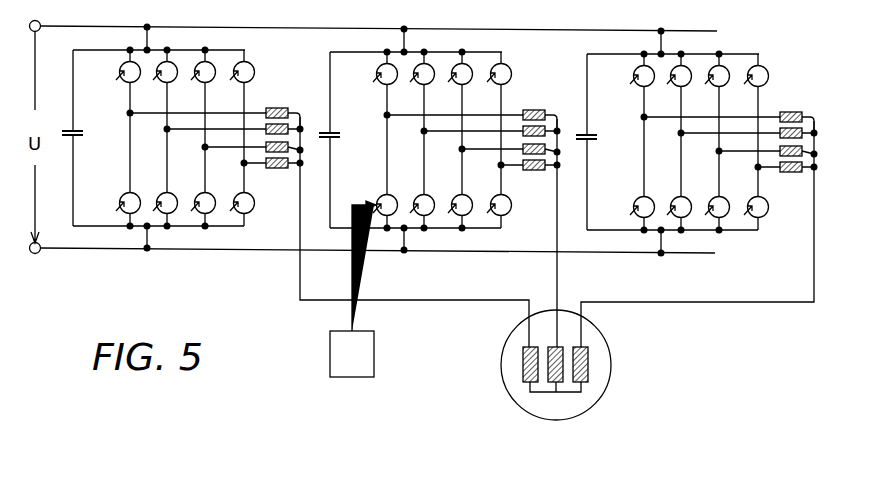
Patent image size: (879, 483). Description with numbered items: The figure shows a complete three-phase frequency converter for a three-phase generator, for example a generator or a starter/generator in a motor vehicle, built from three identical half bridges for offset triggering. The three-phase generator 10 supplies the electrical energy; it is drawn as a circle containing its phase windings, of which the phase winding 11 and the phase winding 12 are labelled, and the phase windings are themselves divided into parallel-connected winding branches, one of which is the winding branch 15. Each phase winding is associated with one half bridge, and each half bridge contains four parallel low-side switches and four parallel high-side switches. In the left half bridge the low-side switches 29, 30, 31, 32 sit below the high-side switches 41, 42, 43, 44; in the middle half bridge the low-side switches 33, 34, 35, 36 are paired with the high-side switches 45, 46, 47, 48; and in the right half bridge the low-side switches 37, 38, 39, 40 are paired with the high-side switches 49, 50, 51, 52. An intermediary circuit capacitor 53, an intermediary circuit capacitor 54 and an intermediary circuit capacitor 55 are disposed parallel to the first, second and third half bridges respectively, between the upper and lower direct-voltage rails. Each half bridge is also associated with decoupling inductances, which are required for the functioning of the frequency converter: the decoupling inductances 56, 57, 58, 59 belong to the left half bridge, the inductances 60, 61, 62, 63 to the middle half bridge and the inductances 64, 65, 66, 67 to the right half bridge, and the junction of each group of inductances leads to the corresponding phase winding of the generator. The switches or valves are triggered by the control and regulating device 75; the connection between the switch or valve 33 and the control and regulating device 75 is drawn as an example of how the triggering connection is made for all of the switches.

The three-phase generator 10 is at (578, 365).
The phase winding 11 is at (522, 353).
The phase winding 12 is at (548, 351).
The winding branch 15 is at (590, 352).
The low-side switch 29 is at (122, 195).
The low-side switch 30 is at (159, 195).
The low-side switch 31 is at (198, 195).
The low-side switch 32 is at (236, 195).
The low-side switch 33 is at (379, 197).
The low-side switch 34 is at (416, 197).
The low-side switch 35 is at (455, 197).
The low-side switch 36 is at (493, 197).
The low-side switch 37 is at (636, 199).
The low-side switch 38 is at (673, 199).
The low-side switch 39 is at (712, 199).
The low-side switch 40 is at (750, 199).
The high-side switch 41 is at (122, 83).
The high-side switch 42 is at (159, 83).
The high-side switch 43 is at (198, 83).
The high-side switch 44 is at (236, 83).
The high-side switch 45 is at (379, 85).
The high-side switch 46 is at (416, 85).
The high-side switch 47 is at (455, 85).
The high-side switch 48 is at (493, 85).
The high-side switch 49 is at (636, 87).
The high-side switch 50 is at (673, 87).
The high-side switch 51 is at (712, 87).
The high-side switch 52 is at (750, 87).
The intermediary circuit capacitor 53 is at (78, 137).
The intermediary circuit capacitor 54 is at (340, 147).
The intermediary circuit capacitor 55 is at (598, 150).
The decoupling inductance 56 is at (279, 108).
The decoupling inductance 57 is at (291, 124).
The decoupling inductance 58 is at (298, 154).
The decoupling inductance 59 is at (278, 169).
The inductance 60 is at (534, 101).
The inductance 61 is at (552, 114).
The inductance 62 is at (555, 159).
The inductance 63 is at (534, 182).
The inductance 64 is at (791, 100).
The inductance 65 is at (809, 117).
The inductance 66 is at (812, 164).
The inductance 67 is at (792, 185).
The control and regulating device 75 is at (375, 352).